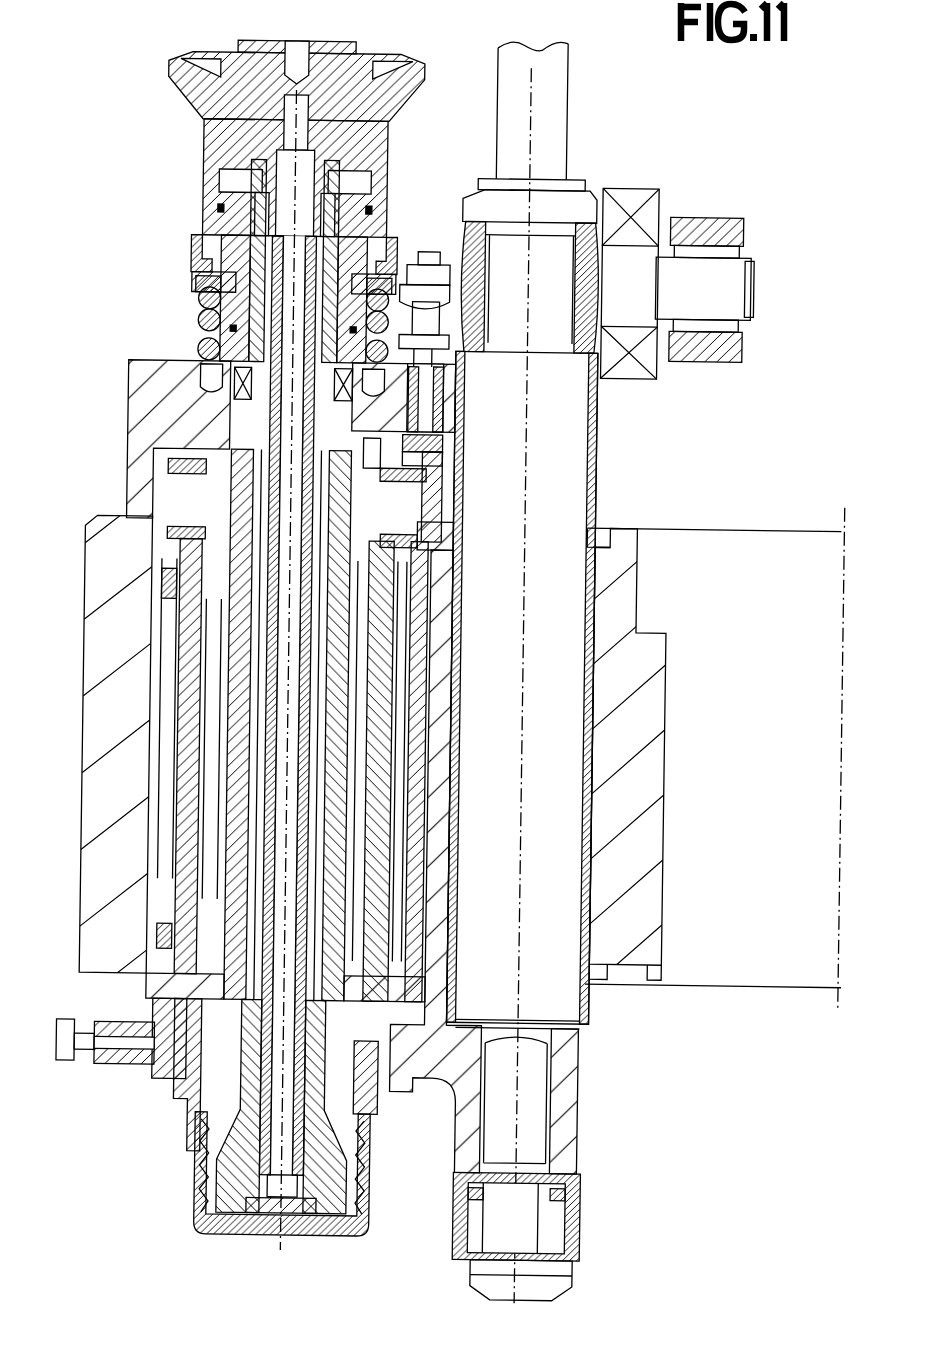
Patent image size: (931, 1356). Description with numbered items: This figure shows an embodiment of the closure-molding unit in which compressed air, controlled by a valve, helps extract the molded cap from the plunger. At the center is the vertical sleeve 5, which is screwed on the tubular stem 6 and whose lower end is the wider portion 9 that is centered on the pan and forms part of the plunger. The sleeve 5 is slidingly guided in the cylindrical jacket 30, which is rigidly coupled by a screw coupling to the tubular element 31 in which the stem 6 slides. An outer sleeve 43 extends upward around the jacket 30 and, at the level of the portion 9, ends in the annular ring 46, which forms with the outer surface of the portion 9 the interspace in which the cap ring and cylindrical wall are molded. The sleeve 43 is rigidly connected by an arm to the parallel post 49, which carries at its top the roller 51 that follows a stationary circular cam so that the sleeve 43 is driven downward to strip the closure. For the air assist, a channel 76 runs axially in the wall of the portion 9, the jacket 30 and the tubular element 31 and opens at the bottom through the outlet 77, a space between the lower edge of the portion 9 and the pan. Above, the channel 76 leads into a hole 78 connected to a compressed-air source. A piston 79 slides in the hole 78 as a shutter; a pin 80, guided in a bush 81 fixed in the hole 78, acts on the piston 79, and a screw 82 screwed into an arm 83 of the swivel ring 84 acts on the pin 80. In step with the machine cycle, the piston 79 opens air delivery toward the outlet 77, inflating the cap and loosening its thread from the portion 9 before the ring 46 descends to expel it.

The vertical sleeve 5 is at (237, 803).
The tubular stem 6 is at (253, 645).
The wider portion 9 is at (197, 1187).
The cylindrical jacket 30 is at (208, 835).
The tubular element 31 is at (215, 582).
The sleeve 43 is at (180, 885).
The annular segment or ring 46 is at (190, 1132).
The post or stem 49 is at (573, 1000).
The roller 51 is at (718, 222).
The channel 76 is at (410, 555).
The outlet 77 is at (366, 1207).
The hole 78 is at (437, 430).
The piston 79 is at (423, 422).
The pin 80 is at (440, 392).
The bush 81 is at (425, 392).
The screw 82 is at (455, 340).
The arm 83 is at (443, 297).
The swivel ring 84 is at (404, 262).